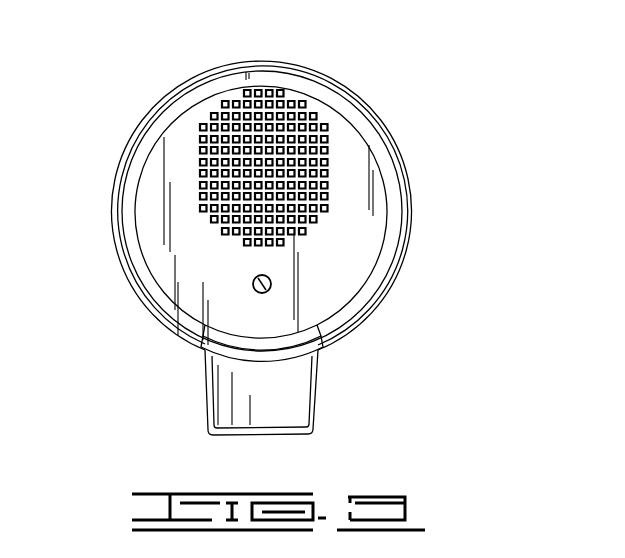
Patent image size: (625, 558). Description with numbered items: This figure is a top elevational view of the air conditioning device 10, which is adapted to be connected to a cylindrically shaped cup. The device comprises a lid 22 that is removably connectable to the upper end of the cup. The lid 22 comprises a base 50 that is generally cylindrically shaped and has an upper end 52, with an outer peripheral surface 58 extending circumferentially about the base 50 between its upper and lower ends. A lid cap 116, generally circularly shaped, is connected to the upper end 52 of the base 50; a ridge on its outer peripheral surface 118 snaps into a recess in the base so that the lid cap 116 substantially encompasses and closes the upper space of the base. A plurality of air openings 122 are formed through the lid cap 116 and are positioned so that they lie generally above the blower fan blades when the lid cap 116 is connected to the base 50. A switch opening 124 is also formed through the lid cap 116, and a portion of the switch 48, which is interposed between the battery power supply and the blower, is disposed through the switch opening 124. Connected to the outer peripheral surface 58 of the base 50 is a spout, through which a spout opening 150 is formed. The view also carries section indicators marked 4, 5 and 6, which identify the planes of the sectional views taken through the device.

The air conditioning device 10 is at (354, 83).
The lid 22 is at (396, 130).
The outer peripheral surface 58 is at (146, 121).
The lid cap 116 is at (382, 188).
The air openings 122 is at (200, 183).
The switch opening 124 is at (257, 281).
The switch 48 is at (271, 289).
The base 50 is at (143, 312).
The upper end 52 is at (168, 338).
The outer peripheral surface 118 is at (190, 355).
The spout opening 150 is at (310, 400).
The section line 4- 4 is at (265, 47).
The section line 5- 5 is at (185, 68).
The section line 6- 6 is at (65, 282).